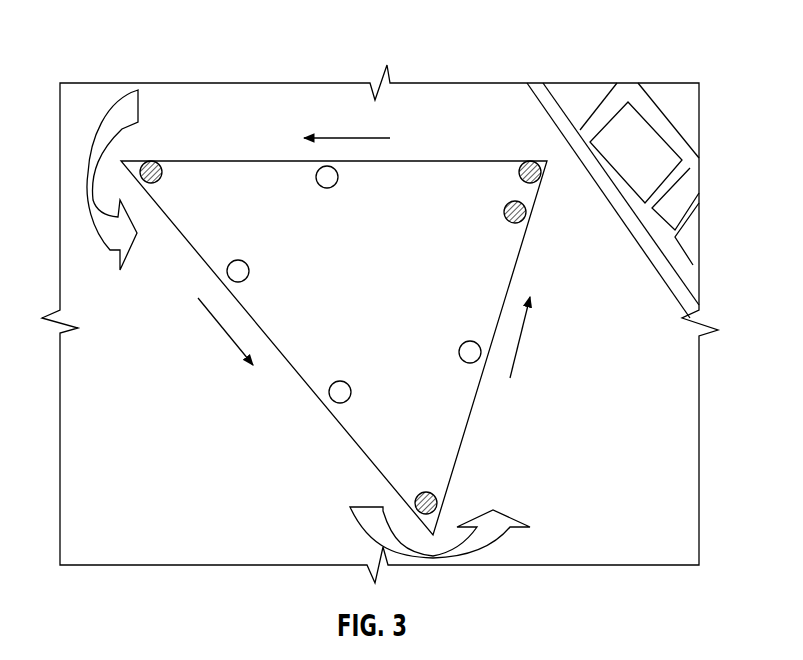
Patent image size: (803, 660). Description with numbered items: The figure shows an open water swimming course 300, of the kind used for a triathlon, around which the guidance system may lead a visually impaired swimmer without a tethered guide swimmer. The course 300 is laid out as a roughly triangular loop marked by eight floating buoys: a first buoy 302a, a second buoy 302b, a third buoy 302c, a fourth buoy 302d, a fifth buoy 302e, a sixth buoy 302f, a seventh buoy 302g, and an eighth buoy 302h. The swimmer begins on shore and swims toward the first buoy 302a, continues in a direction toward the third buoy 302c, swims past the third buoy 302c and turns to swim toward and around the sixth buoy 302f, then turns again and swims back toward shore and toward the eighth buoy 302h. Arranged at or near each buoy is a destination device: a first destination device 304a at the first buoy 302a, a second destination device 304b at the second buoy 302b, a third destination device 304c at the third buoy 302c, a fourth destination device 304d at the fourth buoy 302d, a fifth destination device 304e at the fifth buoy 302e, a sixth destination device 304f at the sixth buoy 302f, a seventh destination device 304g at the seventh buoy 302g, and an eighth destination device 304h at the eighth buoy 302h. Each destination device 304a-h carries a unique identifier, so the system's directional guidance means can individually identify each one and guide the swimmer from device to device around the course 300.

The course 300 is at (108, 40).
The first buoy 302a is at (522, 164).
The second buoy 302b is at (338, 180).
The third buoy 302c is at (153, 160).
The fourth buoy 302d is at (226, 273).
The fifth buoy 302e is at (341, 381).
The sixth buoy 302f is at (424, 492).
The seventh buoy 302g is at (470, 341).
The eighth buoy 302h is at (524, 221).
The first destination device 304a is at (521, 180).
The second destination device 304b is at (328, 189).
The third destination device 304c is at (160, 181).
The fourth destination device 304d is at (250, 273).
The fifth destination device 304e is at (330, 396).
The sixth destination device 304f is at (437, 501).
The seventh destination device 304g is at (459, 355).
The eighth destination device 304h is at (504, 214).